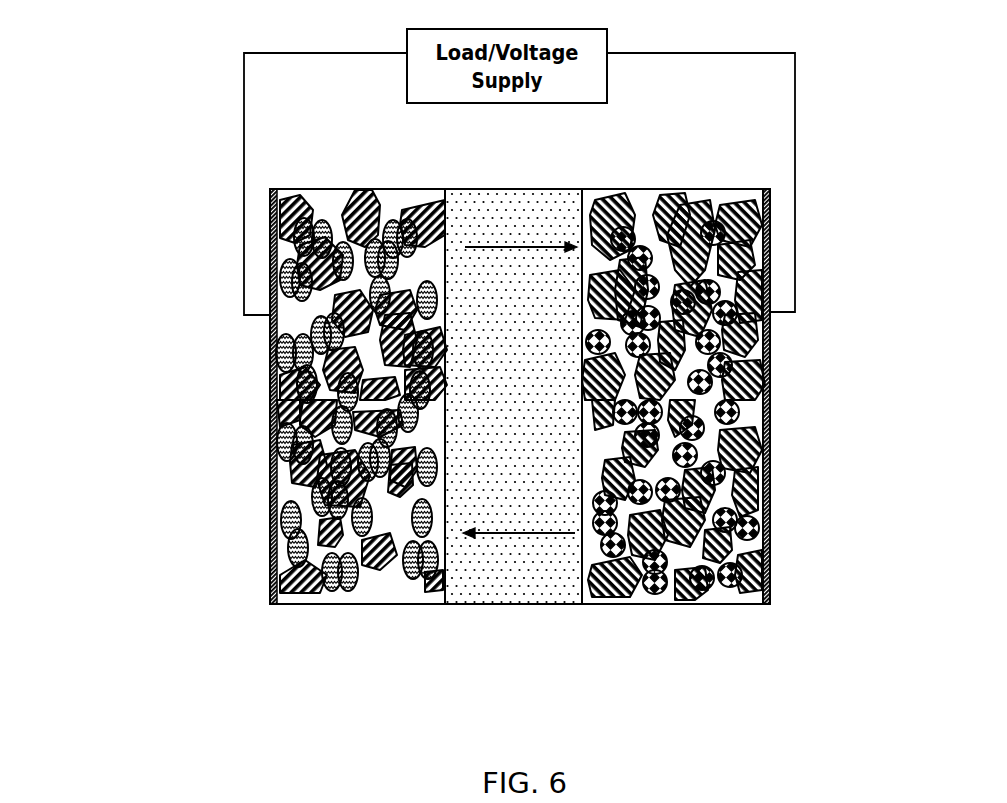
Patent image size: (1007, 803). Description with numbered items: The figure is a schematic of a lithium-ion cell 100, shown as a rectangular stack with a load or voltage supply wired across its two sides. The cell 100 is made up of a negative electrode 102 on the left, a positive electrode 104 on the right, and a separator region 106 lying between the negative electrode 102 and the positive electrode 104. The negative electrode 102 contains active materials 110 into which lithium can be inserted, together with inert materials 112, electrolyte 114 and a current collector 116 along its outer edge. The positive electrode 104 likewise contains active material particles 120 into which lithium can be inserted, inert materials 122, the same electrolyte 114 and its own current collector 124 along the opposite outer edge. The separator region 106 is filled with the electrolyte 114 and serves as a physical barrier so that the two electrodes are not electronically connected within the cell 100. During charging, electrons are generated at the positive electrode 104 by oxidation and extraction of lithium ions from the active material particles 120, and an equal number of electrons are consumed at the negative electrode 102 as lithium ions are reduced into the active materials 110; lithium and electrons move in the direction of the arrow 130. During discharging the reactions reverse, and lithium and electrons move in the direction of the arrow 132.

The lithium-ion cell 100 is at (900, 195).
The negative electrode 102 is at (186, 280).
The positive electrode 104 is at (885, 568).
The separator region 106 is at (510, 598).
The active materials 110 is at (297, 480).
The inert materials 112 is at (403, 206).
The electrolyte 114 is at (378, 197).
The current collector 116 is at (278, 562).
The active material particles 120 is at (764, 357).
The inert materials 122 is at (737, 190).
The current collector 124 is at (772, 438).
The arrow 130 is at (545, 538).
The arrow 132 is at (487, 245).